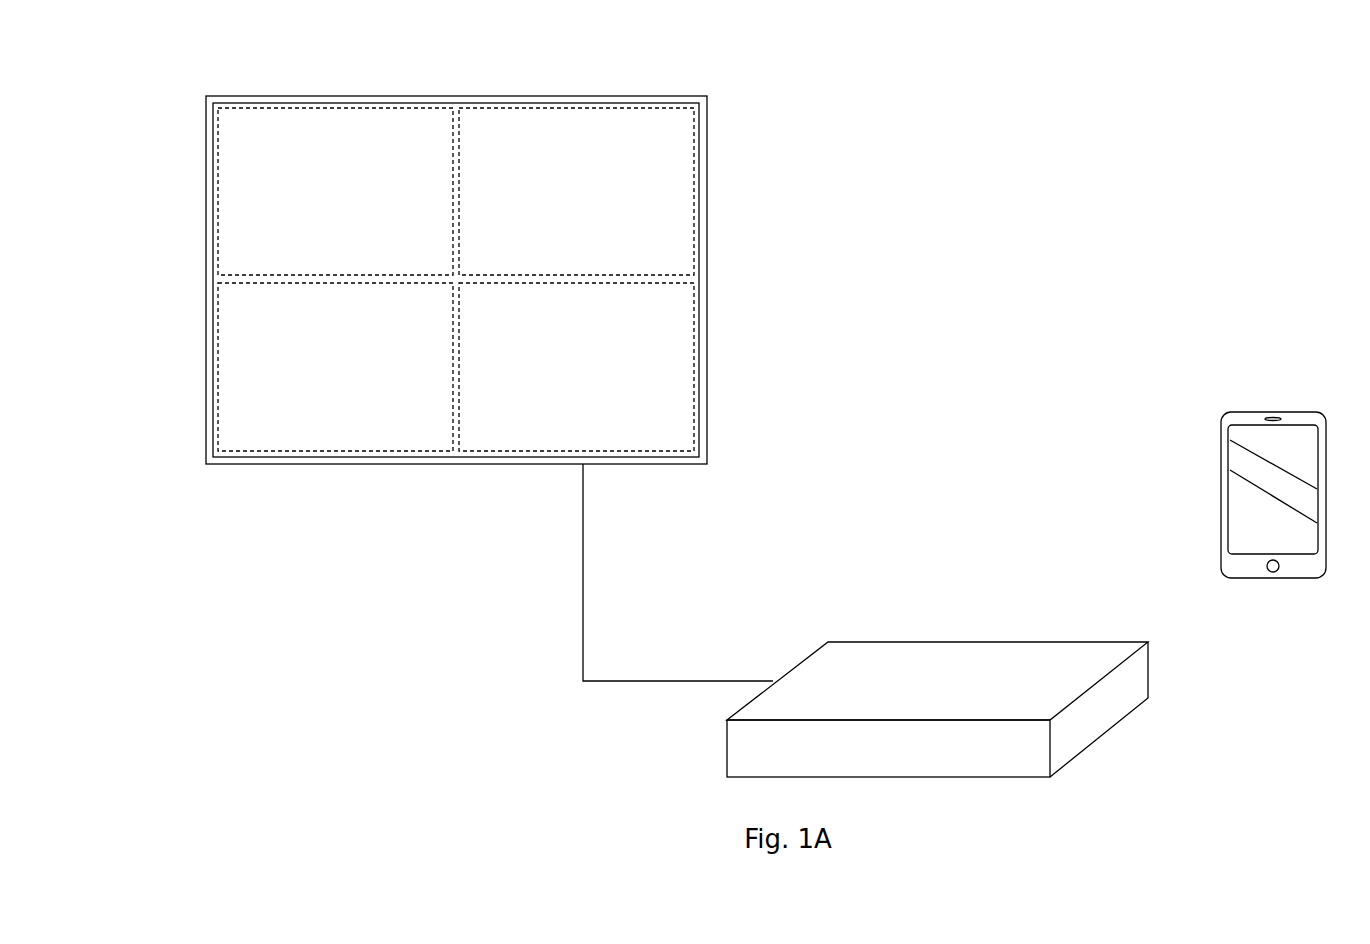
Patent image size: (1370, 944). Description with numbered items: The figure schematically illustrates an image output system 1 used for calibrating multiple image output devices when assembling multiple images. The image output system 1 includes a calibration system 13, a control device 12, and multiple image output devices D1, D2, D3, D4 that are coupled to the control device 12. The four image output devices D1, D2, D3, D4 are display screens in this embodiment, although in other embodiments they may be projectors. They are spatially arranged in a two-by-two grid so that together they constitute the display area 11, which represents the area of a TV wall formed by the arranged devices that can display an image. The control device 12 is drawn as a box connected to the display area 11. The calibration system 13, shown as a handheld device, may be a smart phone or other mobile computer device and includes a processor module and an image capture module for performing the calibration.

The image output system 1 is at (147, 69).
The display area 11 is at (209, 388).
The image output device D1 is at (400, 262).
The image output device D2 is at (657, 262).
The image output device D3 is at (406, 440).
The image output device D4 is at (657, 440).
The control device 12 is at (1011, 706).
The calibration system 13 is at (1298, 412).